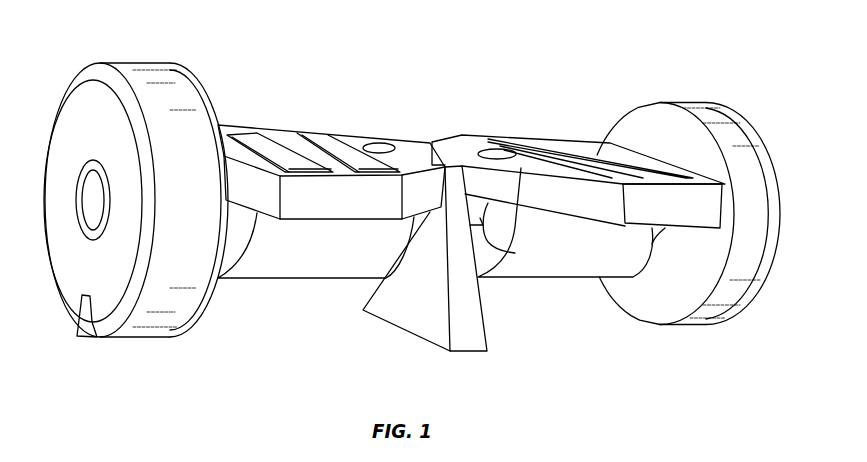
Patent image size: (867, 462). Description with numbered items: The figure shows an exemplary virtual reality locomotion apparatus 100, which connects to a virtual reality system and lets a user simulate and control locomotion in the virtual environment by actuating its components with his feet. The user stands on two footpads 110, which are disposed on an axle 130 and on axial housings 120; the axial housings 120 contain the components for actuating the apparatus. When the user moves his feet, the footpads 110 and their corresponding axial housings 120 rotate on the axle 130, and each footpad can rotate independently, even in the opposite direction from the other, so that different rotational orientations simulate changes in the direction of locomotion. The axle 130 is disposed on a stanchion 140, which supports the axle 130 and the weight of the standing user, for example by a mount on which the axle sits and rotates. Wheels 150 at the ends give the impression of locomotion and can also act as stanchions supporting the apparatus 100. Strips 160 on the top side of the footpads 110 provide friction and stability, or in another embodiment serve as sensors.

The virtual reality locomotion apparatus 100 is at (689, 59).
The footpads 110 is at (351, 137).
The axial housings 120 is at (276, 266).
The axle 130 is at (514, 253).
The stanchion 140 is at (401, 320).
The wheels 150 is at (155, 70).
The strips 160 is at (283, 133).